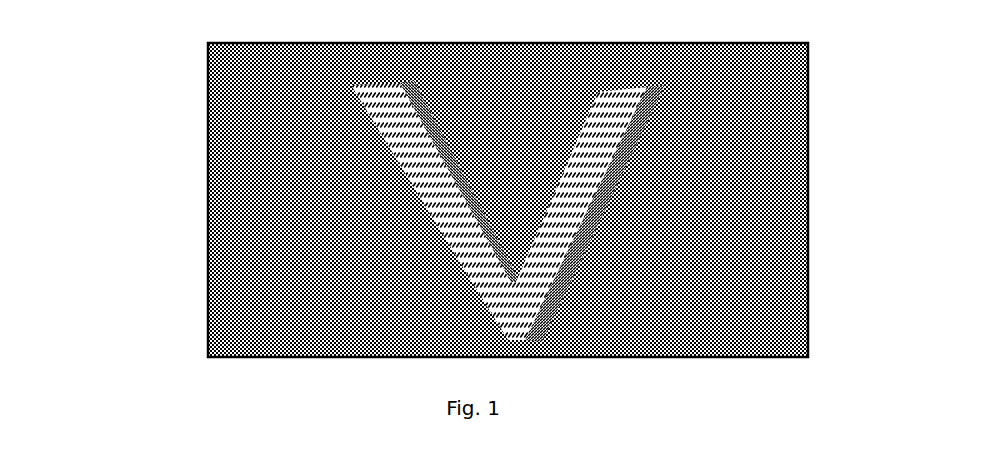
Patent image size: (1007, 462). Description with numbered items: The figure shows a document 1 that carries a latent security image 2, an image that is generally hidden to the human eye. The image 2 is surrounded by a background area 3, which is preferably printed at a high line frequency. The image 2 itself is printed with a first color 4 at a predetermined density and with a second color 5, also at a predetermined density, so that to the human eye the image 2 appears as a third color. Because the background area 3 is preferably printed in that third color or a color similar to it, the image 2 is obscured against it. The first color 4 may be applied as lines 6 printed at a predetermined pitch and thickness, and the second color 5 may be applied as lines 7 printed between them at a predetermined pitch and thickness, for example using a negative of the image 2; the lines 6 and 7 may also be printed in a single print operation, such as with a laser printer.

The document 1 is at (208, 152).
The latent security image 2 is at (457, 252).
The background area 3 is at (243, 197).
The first color 4 is at (450, 187).
The second color 5 is at (597, 153).
The lines having a first color 6 is at (593, 203).
The lines having a second color 7 is at (547, 263).